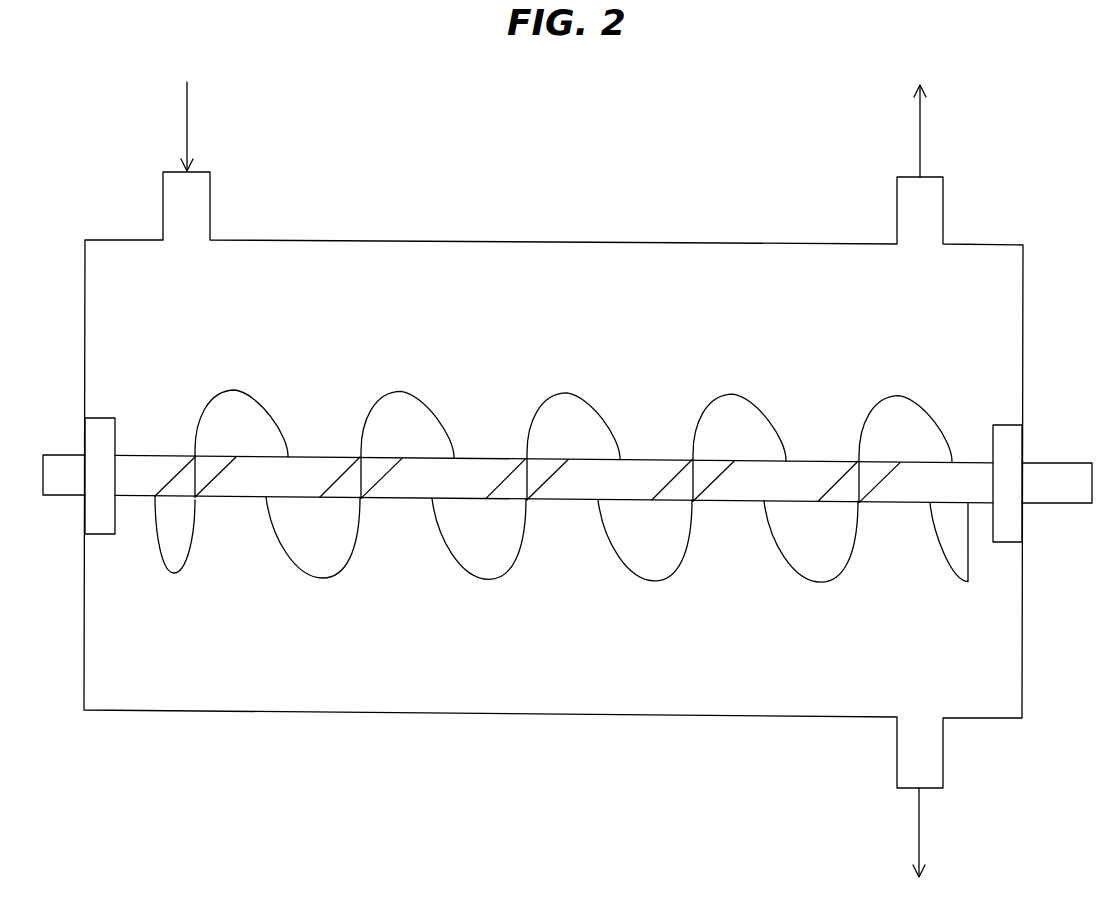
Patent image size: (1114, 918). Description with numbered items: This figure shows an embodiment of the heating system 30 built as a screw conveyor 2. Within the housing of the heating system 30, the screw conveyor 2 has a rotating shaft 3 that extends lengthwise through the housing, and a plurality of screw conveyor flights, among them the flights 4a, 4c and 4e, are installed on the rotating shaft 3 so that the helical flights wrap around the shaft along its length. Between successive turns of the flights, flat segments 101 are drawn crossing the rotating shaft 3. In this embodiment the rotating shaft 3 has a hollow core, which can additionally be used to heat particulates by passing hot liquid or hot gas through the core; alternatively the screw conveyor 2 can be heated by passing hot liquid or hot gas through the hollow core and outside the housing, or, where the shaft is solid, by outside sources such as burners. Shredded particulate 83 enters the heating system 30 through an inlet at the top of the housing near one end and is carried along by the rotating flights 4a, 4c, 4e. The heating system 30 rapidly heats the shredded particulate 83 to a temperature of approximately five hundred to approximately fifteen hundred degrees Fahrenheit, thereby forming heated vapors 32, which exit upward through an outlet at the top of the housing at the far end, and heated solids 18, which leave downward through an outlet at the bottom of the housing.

The screw conveyor 2 is at (142, 416).
The rotating shaft 3 is at (752, 502).
The screw conveyor flight 4a is at (239, 389).
The screw conveyor flight 4c is at (565, 392).
The screw conveyor flight 4e is at (899, 395).
The flat blade portion 101 is at (634, 477).
The heating system 30 is at (794, 243).
The shredded particulate 83 is at (187, 124).
The heated vapors 32 is at (921, 130).
The heated solids 18 is at (921, 830).